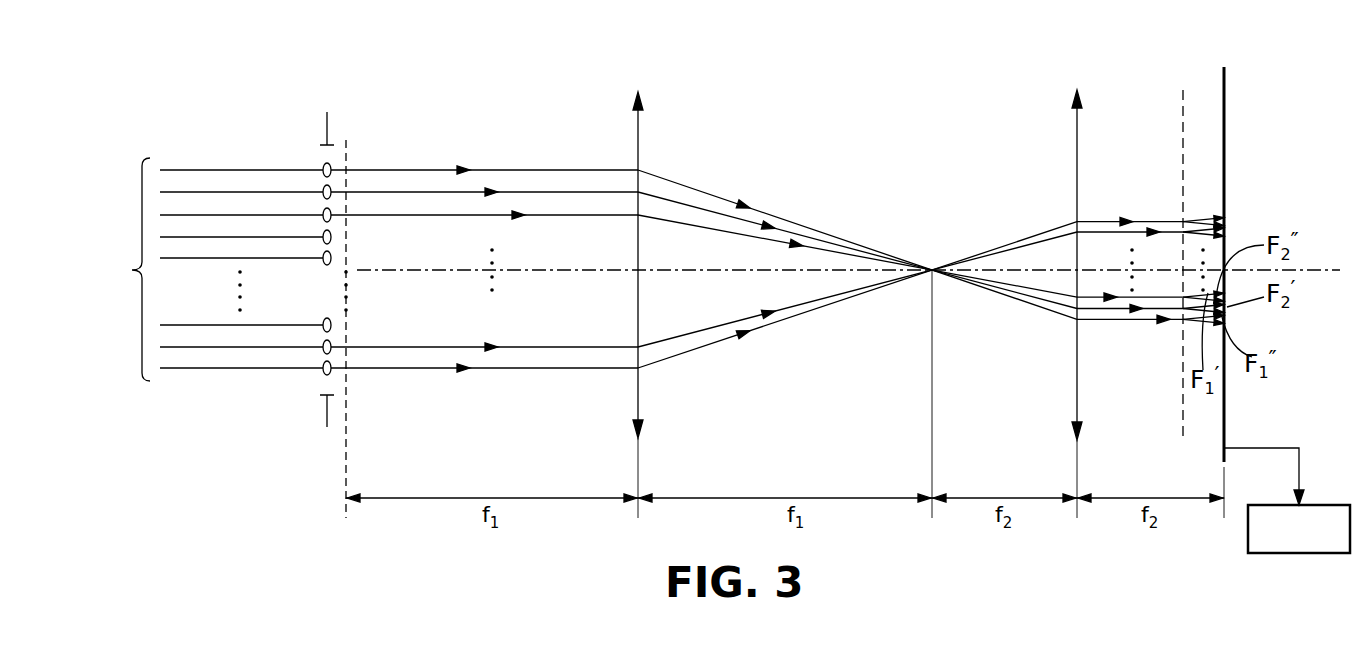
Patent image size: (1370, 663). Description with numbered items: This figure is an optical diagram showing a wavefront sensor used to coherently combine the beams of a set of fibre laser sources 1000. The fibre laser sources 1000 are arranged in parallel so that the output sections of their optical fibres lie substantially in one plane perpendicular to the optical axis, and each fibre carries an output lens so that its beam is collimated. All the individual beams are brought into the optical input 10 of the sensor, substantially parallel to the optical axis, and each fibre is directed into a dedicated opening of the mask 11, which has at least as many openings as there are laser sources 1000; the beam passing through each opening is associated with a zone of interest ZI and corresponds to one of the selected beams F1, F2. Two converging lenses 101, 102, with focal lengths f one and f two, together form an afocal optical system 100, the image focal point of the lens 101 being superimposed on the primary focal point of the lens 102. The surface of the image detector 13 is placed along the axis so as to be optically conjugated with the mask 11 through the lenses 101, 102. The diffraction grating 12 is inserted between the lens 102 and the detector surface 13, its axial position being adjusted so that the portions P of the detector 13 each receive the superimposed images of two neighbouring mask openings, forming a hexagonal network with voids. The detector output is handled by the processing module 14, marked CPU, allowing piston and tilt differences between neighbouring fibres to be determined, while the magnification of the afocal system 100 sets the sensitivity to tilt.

The fibre laser sources 1000 is at (195, 269).
The optical input of the wavefront sensor 10 is at (326, 118).
The mask with separate openings 11 is at (347, 147).
The zone of interest ZI is at (345, 220).
The selected beam F1 is at (517, 168).
The selected beam F2 is at (565, 192).
The afocal optical system 100 is at (857, 263).
The converging lens 101 is at (640, 133).
The converging lens 102 is at (1039, 304).
The diffraction grating 12 is at (1180, 107).
The surface of an image detector 13 is at (1226, 110).
The processing module 14 is at (1332, 553).
The portions of the surface of the image detector P is at (1225, 225).